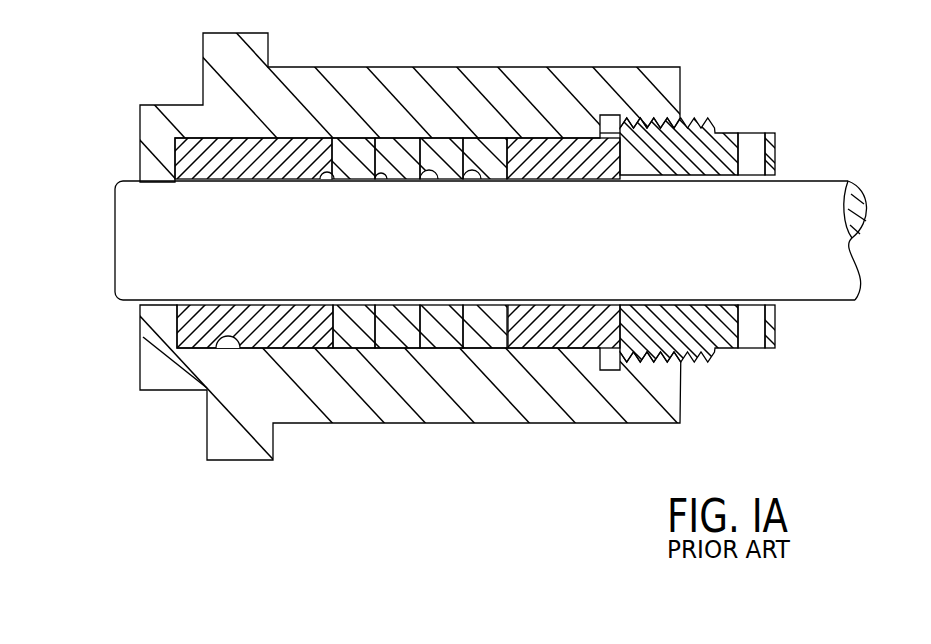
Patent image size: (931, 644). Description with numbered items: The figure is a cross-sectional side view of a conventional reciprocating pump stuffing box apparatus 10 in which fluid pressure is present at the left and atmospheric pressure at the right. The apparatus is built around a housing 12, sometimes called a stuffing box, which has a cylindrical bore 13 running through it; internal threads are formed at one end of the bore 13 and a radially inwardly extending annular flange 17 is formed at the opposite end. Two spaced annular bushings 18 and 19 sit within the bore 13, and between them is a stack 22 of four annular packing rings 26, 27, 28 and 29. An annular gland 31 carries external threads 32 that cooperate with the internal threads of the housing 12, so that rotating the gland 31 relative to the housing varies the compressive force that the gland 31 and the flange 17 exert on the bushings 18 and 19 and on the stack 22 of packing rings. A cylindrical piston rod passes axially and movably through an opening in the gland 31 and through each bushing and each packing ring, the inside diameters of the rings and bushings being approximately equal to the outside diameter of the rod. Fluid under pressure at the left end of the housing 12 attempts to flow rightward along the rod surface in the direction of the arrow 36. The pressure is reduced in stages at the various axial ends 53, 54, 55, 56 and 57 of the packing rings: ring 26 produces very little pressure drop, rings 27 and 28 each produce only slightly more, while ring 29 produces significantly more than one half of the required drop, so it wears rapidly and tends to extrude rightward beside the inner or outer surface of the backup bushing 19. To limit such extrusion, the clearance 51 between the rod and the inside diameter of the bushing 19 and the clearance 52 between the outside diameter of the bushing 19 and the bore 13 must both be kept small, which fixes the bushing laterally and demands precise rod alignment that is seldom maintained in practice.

The stuffing box apparatus 10 is at (128, 70).
The housing 12 is at (136, 377).
The bore 13 is at (222, 348).
The annular flange 17 is at (150, 170).
The annular bushing 18 is at (205, 332).
The annular bushing 19 is at (562, 333).
The stack of packing rings 22 is at (436, 364).
The packing ring 26 is at (353, 340).
The packing ring 27 is at (405, 337).
The packing ring 28 is at (453, 338).
The packing ring 29 is at (493, 340).
The annular gland 31 is at (725, 335).
The external threads 32 is at (690, 362).
The arrow 36 is at (430, 208).
The clearance 51 is at (543, 177).
The clearance 52 is at (570, 137).
The axial end 53 is at (322, 176).
The axial end 54 is at (380, 180).
The axial end 55 is at (422, 170).
The axial end 56 is at (465, 172).
The axial end 57 is at (508, 168).